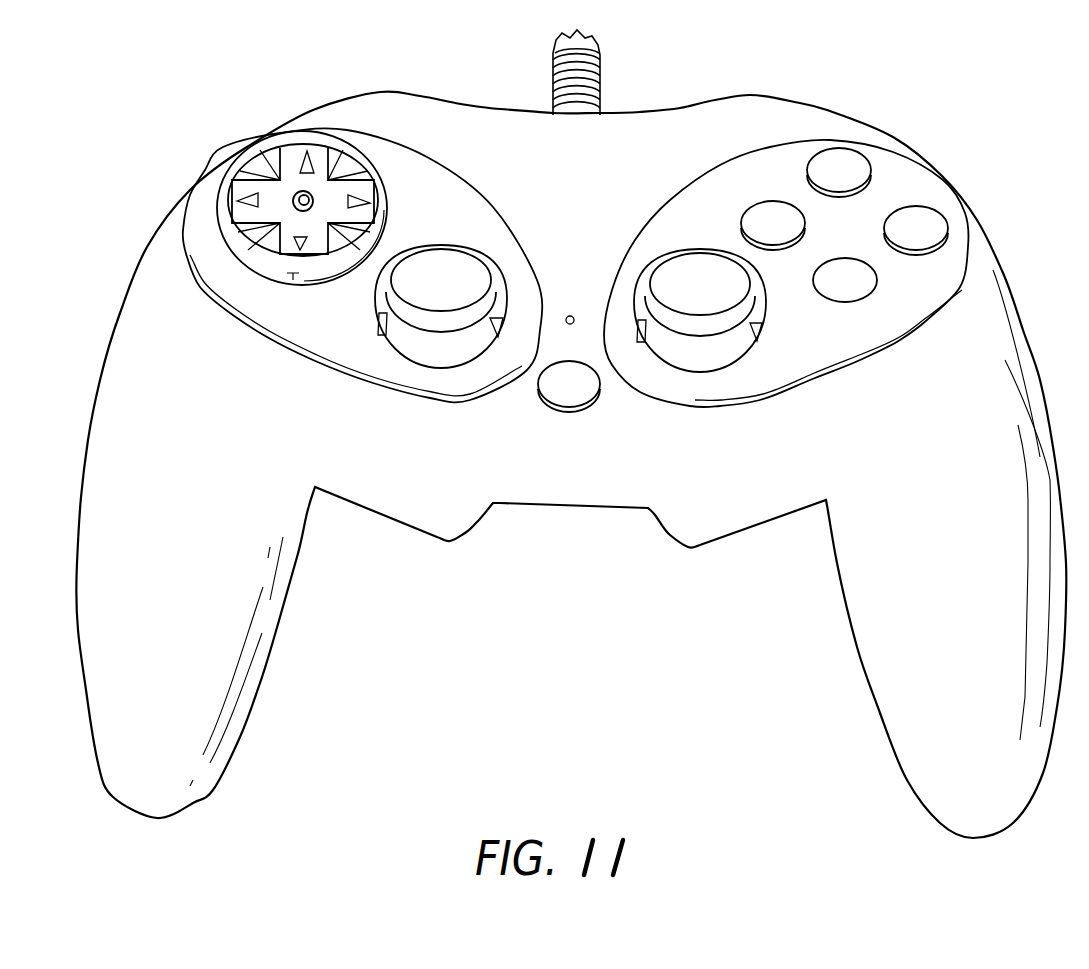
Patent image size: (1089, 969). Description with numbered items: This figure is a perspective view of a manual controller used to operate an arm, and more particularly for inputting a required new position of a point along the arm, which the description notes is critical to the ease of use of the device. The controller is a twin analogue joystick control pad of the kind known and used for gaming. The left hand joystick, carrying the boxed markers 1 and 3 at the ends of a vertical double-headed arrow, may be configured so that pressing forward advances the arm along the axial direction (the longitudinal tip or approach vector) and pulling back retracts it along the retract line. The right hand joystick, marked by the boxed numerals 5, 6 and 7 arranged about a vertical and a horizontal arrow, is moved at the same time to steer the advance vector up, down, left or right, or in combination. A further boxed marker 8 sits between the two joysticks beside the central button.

The left joystick forward direction 1 is at (429, 422).
The left joystick backward direction 3 is at (439, 399).
The right joystick forward direction 5 is at (690, 431).
The right joystick right direction 6 is at (560, 301).
The right joystick backward direction 7 is at (700, 405).
The center indicator button 8 is at (576, 257).